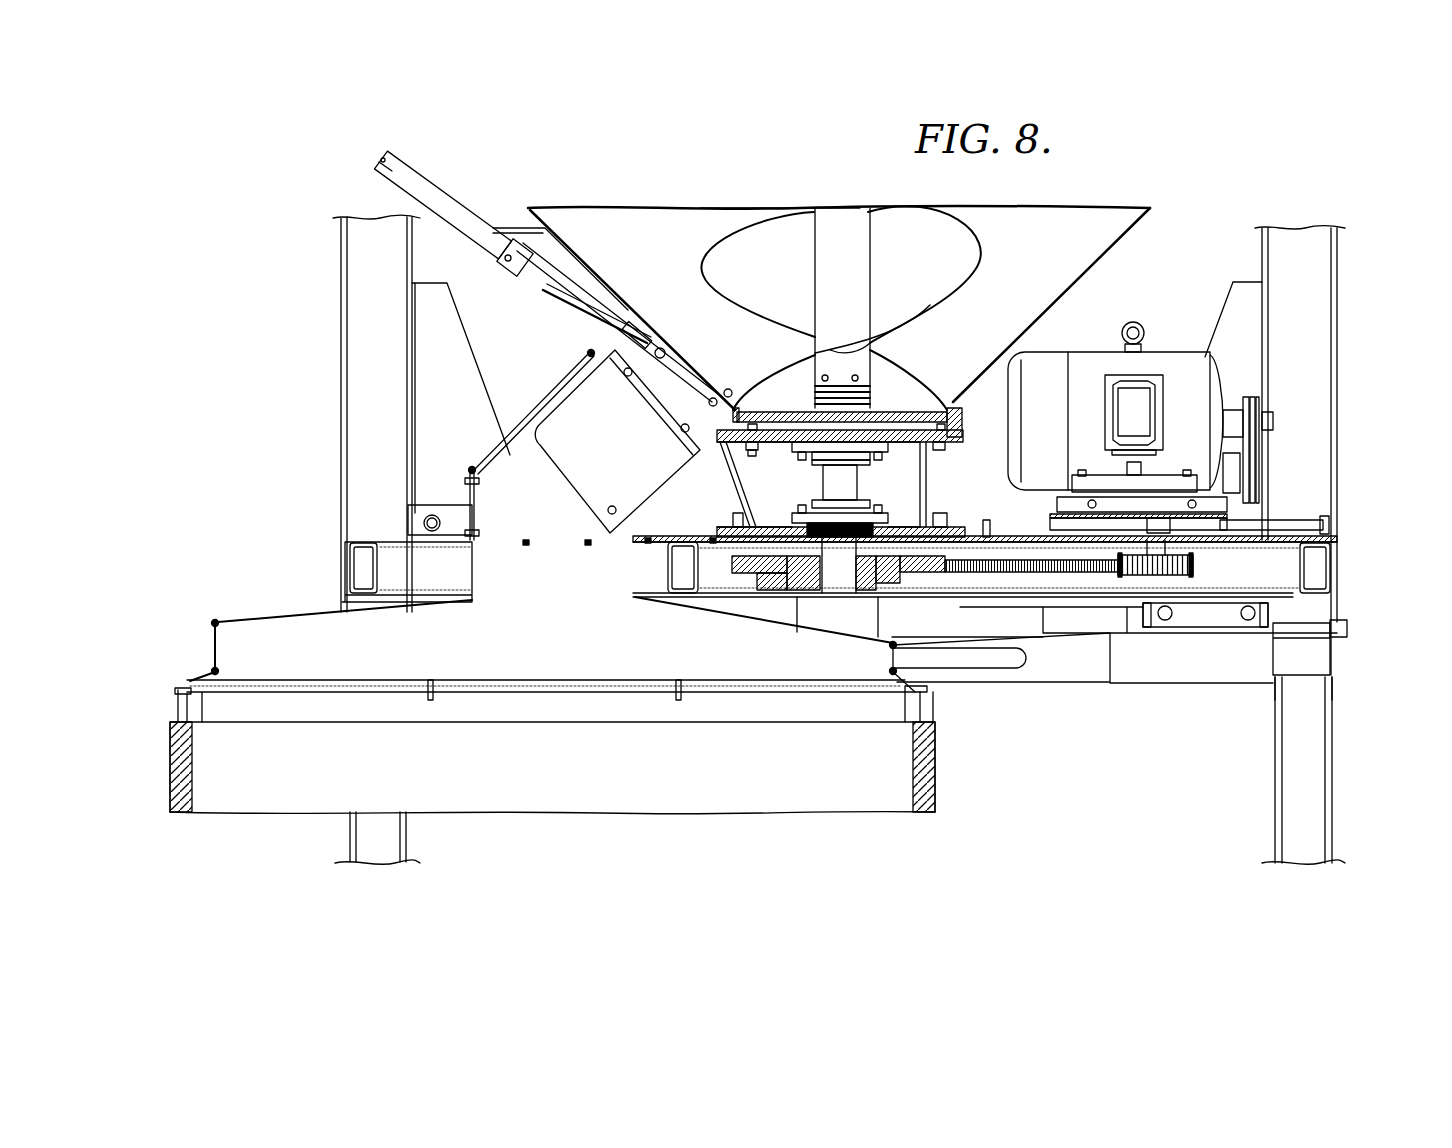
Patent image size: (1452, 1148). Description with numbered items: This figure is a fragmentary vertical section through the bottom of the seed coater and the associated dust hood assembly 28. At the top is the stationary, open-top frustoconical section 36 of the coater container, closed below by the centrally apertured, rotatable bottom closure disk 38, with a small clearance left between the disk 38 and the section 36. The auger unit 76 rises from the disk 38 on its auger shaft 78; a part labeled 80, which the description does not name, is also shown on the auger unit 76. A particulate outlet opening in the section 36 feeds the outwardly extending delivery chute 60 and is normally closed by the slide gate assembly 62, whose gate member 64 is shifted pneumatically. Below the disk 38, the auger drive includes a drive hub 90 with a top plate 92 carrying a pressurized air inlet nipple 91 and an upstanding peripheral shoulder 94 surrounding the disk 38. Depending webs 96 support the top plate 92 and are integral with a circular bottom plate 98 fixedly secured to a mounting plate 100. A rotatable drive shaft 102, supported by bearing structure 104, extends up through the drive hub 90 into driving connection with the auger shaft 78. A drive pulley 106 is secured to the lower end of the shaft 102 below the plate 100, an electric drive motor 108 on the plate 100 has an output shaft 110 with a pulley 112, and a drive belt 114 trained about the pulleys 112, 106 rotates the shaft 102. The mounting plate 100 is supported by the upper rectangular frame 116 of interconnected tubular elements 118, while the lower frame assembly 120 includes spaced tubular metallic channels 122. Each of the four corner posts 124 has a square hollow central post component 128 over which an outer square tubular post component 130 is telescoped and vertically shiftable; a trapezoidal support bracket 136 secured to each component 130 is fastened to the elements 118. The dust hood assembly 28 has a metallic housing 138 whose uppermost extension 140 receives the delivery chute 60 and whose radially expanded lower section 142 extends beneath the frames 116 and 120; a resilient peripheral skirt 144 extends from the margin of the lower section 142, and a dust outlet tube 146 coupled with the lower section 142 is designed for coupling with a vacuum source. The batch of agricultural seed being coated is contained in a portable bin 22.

The portable bin 22 is at (946, 797).
The dust hood assembly 28 is at (277, 610).
The frustoconical section 36 is at (1089, 222).
The bottom closure disk 38 is at (888, 413).
The delivery chute 60 is at (572, 478).
The slide gate assembly 62 is at (507, 218).
The gate member 64 is at (701, 388).
The auger unit 76 is at (784, 213).
The auger shaft 78 is at (845, 287).
The auger flight 80 is at (770, 288).
The drive hub 90 is at (938, 462).
The pressurized air inlet nipple 91 is at (750, 447).
The top plate 92 is at (782, 430).
The upstanding peripheral shoulder 94 is at (952, 418).
The depending webs 96 is at (927, 480).
The circular bottom plate 98 is at (953, 530).
The mounting plate 100 is at (690, 537).
The drive shaft 102 is at (848, 478).
The bearing structure 104 is at (800, 520).
The drive pulley 106 is at (790, 573).
The electric drive motor 108 is at (1170, 362).
The output shaft 110 is at (1160, 530).
The pulley 112 is at (1023, 572).
The drive belt 114 is at (1194, 566).
The upper rectangular frame 116 is at (380, 535).
The tubular elements 118 is at (383, 578).
The lower frame assembly 120 is at (1303, 680).
The tubular metallic channels 122 is at (1322, 665).
The corner posts 124 is at (337, 240).
The central post component 128 is at (385, 831).
The outer square tubular post component 130 is at (356, 400).
The support bracket 136 is at (441, 342).
The metallic housing 138 is at (526, 400).
The uppermost extension 140 is at (508, 466).
The lower section 142 is at (253, 633).
The resilient peripheral skirt 144 is at (850, 710).
The dust outlet tube 146 is at (1200, 672).